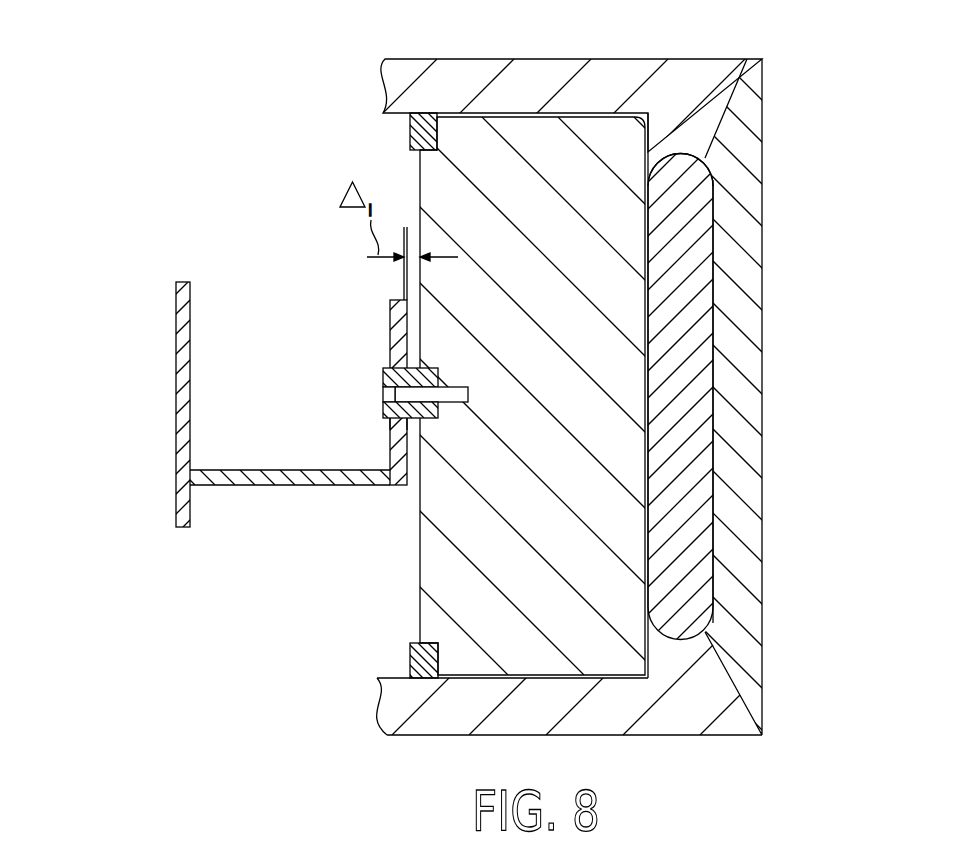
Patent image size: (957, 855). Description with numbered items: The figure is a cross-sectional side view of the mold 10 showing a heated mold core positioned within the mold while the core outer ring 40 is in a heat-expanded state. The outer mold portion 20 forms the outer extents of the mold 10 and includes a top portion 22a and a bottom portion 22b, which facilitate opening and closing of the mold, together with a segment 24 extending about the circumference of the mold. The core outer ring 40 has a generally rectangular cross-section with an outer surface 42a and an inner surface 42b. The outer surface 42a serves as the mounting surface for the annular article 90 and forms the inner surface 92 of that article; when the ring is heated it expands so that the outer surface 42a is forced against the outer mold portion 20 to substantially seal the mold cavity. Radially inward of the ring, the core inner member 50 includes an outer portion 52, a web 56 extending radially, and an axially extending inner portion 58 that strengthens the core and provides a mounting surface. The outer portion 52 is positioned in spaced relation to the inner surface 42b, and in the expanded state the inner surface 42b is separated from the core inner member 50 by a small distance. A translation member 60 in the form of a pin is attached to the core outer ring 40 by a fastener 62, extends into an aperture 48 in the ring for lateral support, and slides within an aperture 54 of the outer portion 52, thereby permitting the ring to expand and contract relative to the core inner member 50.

The mold 10 is at (883, 167).
The outer mold portion 20 is at (763, 599).
The top portion 22a is at (692, 58).
The bottom portion 22b is at (710, 736).
The segments 24 is at (752, 486).
The core outer ring 40 is at (552, 517).
The outer surface 42a is at (650, 219).
The inner surface 42b is at (420, 553).
The aperture 48 is at (430, 418).
The core inner member 50 is at (300, 411).
The outer portion 52 is at (390, 319).
The aperture 54 is at (398, 424).
The web 56 is at (233, 470).
The inner portion 58 is at (176, 388).
The translation member 60 is at (383, 373).
The fastener 62 is at (455, 387).
The annular article 90 is at (693, 336).
The inner surface 92 is at (633, 258).